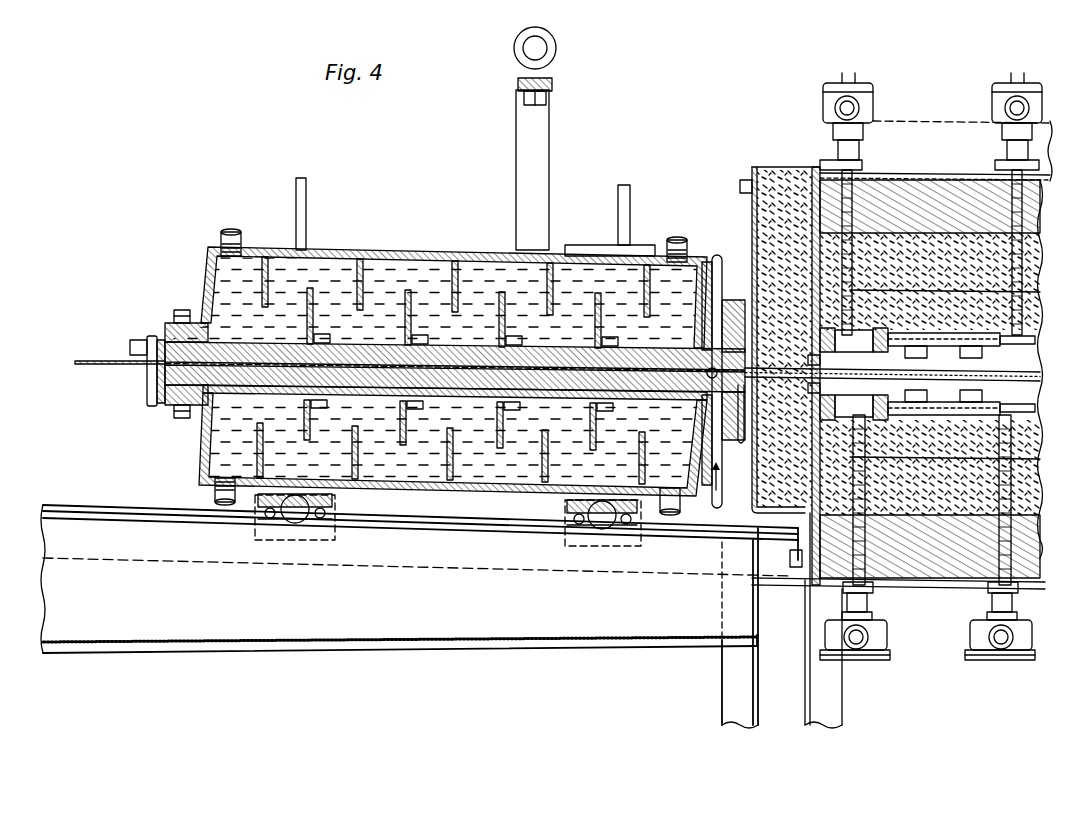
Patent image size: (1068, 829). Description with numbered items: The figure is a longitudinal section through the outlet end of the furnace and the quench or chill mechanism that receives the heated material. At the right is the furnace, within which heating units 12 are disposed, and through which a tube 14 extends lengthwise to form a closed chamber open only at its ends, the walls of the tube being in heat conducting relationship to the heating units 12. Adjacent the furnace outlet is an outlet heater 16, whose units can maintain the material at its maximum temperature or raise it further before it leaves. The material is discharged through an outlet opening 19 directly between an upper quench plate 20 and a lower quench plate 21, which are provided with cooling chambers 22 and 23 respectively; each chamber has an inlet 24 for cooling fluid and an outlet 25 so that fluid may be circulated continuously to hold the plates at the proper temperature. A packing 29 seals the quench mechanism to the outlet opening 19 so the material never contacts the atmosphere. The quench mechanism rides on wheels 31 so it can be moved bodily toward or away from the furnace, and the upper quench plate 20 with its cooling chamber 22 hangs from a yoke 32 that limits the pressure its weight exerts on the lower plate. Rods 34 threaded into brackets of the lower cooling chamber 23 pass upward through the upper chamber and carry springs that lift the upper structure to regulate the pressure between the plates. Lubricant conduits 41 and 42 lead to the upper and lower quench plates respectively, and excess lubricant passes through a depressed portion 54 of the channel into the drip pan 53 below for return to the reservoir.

The heating units 12 is at (1028, 285).
The tube 14 is at (1022, 403).
The outlet heater 16 is at (854, 350).
The outlet opening 19 is at (788, 366).
The upper quench plate 20 is at (240, 362).
The lower quench plate 21 is at (224, 395).
The cooling chamber 22 is at (386, 268).
The cooling chamber 23 is at (432, 466).
The inlet 24 is at (676, 236).
The outlet 25 is at (232, 230).
The packing 29 is at (738, 432).
The wheels 31 is at (300, 518).
The yoke 32 is at (530, 136).
The rods 34 is at (306, 192).
The conduits 41 is at (722, 228).
The conduits 42 is at (712, 492).
The drip pan 53 is at (240, 630).
The depressed portion 54 is at (154, 366).